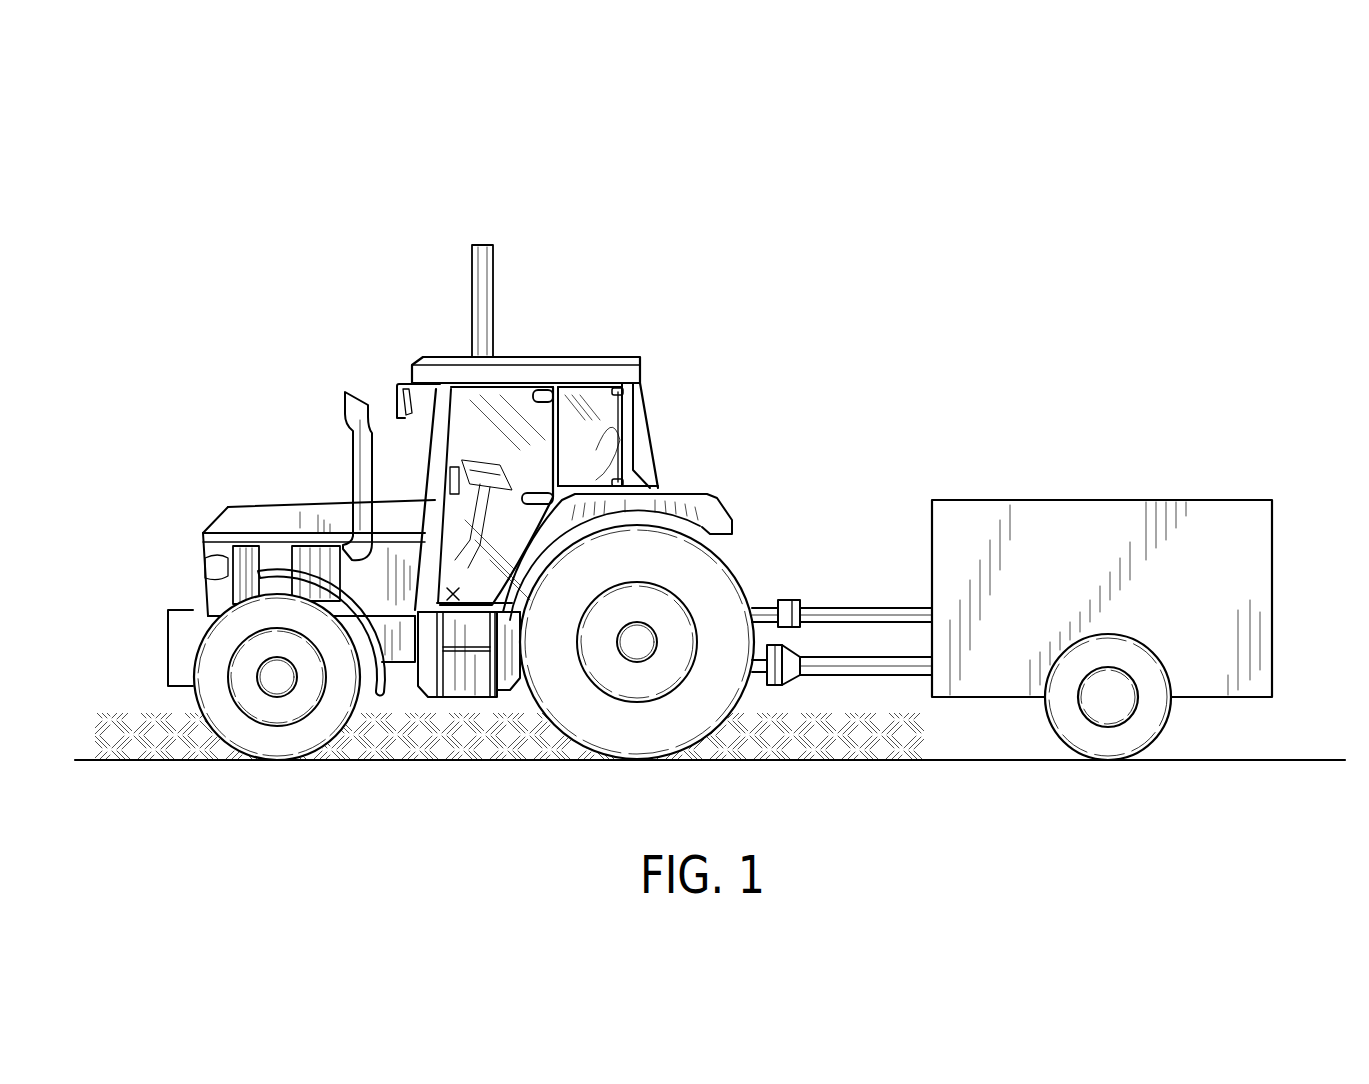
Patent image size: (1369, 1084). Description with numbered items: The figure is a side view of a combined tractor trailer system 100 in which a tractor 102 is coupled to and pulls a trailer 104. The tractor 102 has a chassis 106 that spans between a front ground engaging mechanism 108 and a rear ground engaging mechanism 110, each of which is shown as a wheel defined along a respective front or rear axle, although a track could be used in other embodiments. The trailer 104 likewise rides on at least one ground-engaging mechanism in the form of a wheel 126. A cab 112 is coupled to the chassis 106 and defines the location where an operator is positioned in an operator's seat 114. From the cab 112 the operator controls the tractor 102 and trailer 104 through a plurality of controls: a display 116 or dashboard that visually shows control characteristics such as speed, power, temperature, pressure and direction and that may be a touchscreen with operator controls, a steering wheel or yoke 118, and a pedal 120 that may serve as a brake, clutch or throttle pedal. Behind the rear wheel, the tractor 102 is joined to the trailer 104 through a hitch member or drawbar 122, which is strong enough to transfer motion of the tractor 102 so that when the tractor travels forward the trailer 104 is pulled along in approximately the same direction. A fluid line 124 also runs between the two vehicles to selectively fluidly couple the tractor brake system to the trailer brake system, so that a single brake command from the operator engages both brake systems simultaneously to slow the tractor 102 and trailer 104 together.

The combined tractor trailer system 100 is at (196, 216).
The tractor 102 is at (428, 338).
The trailer 104 is at (1066, 505).
The chassis 106 is at (408, 657).
The front ground engaging mechanism 108 is at (278, 737).
The rear ground engaging mechanism 110 is at (639, 737).
The cab 112 is at (520, 407).
The operator's seat 114 is at (598, 443).
The display 116 is at (460, 477).
The steering wheel or yoke 118 is at (478, 463).
The pedal 120 is at (453, 592).
The hitch member or drawbar 122 is at (790, 672).
The fluid line 124 is at (766, 608).
The wheel 126 is at (1110, 743).